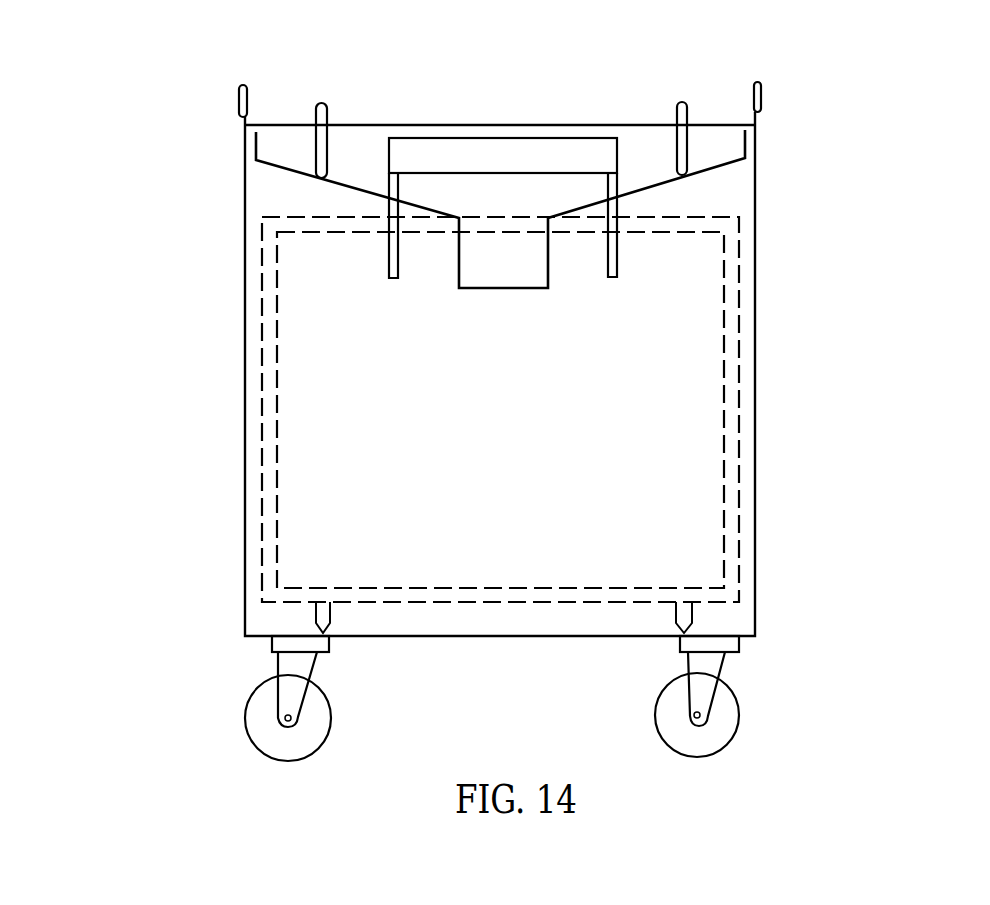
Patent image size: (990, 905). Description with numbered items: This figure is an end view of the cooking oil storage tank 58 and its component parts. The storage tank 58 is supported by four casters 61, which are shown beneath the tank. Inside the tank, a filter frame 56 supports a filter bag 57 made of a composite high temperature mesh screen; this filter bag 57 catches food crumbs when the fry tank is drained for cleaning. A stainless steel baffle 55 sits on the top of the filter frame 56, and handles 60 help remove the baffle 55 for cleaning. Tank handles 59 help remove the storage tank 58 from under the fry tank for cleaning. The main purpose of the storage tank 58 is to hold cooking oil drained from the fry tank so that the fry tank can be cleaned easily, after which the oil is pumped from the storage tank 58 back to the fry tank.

The stainless steel baffle 55 is at (695, 173).
The filter frame 56 is at (739, 336).
The filter bag 57 is at (278, 383).
The cooking oil storage tank 58 is at (755, 433).
The tank handles 59 is at (389, 172).
The handles 60 is at (320, 103).
The casters 61 is at (742, 713).